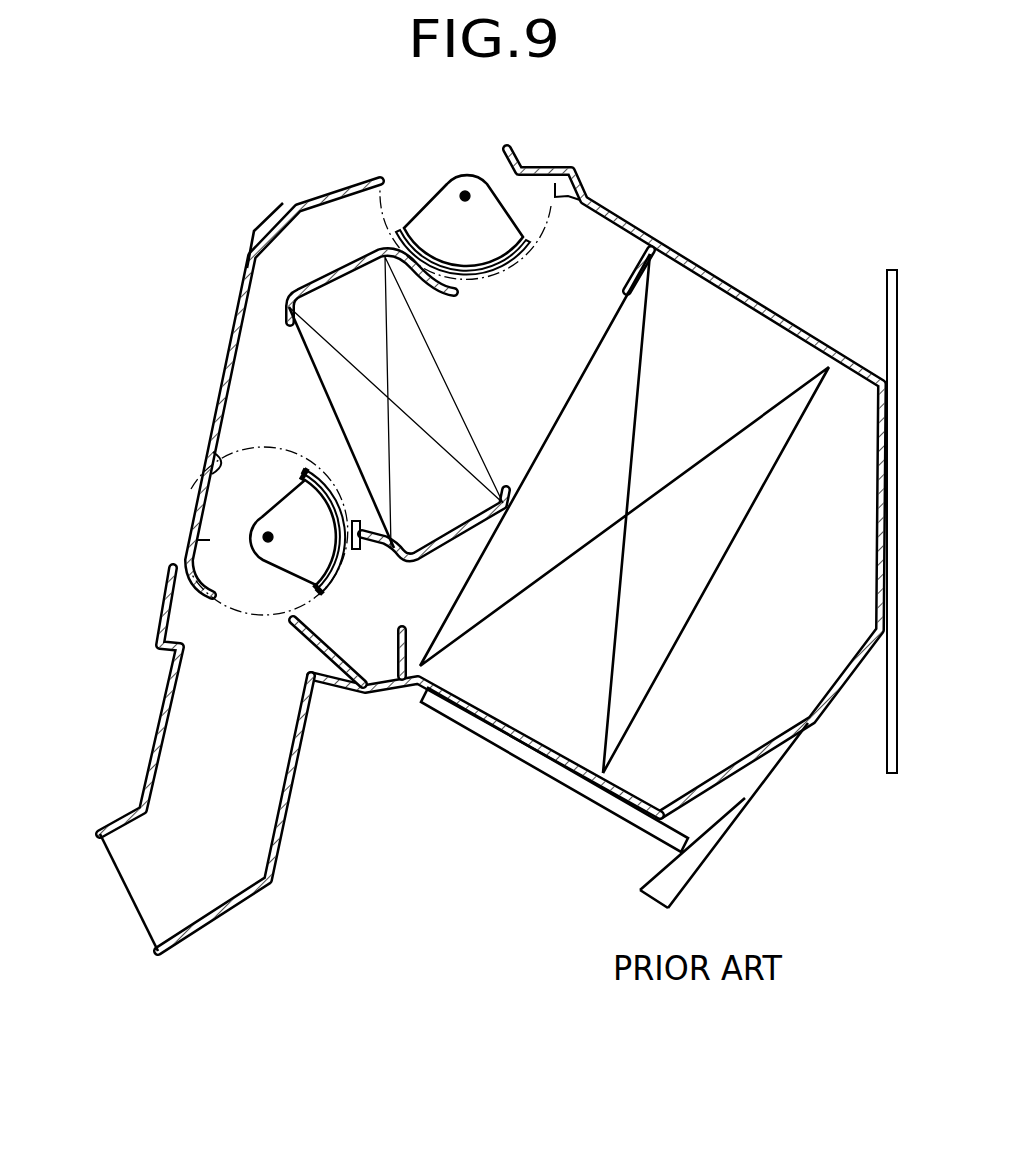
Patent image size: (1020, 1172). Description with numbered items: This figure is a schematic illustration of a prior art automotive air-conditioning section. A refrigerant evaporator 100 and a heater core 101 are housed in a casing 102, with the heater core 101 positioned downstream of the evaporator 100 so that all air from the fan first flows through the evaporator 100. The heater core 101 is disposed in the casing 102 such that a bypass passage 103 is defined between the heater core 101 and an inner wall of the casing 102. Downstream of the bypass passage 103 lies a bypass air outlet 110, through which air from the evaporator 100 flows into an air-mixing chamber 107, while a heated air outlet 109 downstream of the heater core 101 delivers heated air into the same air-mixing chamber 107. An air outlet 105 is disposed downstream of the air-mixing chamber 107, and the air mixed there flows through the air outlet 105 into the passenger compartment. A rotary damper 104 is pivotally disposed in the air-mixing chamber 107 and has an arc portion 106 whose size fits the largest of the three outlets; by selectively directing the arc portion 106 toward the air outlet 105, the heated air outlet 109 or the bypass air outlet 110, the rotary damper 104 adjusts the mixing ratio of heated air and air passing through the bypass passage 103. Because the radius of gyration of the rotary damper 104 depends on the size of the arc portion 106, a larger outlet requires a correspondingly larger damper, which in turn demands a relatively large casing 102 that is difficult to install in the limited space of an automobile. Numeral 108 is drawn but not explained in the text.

The refrigerant evaporator 100 is at (733, 328).
The heater core 101 is at (318, 350).
The casing 102 is at (552, 768).
The bypass passage 103 is at (384, 625).
The rotary damper 104 is at (297, 550).
The air outlet 105 is at (243, 612).
The arc portion 106 is at (320, 462).
The air-mixing chamber 107 is at (213, 528).
The upper shutter 108 is at (465, 227).
The heated air outlet 109 is at (253, 460).
The bypass air outlet 110 is at (325, 598).